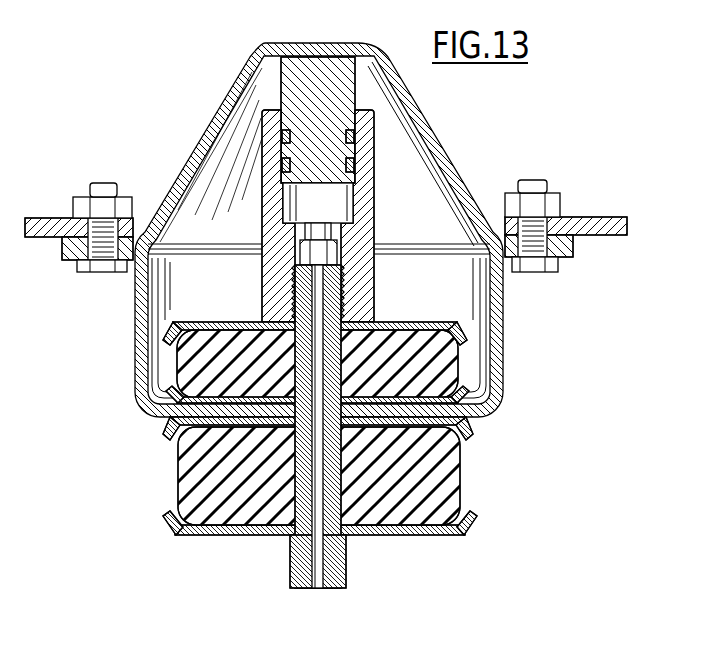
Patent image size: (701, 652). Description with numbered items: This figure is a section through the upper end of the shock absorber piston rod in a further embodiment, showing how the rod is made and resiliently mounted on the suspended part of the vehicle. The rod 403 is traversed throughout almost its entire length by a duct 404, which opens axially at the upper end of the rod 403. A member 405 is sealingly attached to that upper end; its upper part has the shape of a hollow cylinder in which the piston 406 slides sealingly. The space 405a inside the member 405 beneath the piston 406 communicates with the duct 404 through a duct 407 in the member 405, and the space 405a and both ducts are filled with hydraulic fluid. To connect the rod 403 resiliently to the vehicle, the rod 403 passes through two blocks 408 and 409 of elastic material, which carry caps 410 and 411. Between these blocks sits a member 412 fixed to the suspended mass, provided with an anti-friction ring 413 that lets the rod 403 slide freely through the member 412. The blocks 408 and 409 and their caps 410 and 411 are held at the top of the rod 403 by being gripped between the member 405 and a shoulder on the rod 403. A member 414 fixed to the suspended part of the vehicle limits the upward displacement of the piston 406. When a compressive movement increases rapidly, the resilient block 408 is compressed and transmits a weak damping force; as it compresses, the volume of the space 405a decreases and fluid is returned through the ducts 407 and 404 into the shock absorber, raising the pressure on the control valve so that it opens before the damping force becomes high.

The rod 403 is at (346, 578).
The duct 404 is at (310, 574).
The member 405 is at (270, 266).
The space 405a is at (352, 205).
The piston 406 is at (305, 58).
The duct 407 is at (318, 203).
The block of elastic material 408 is at (440, 466).
The block of elastic material 409 is at (231, 327).
The cap 410 is at (463, 422).
The cap 411 is at (423, 327).
The member 412 is at (503, 320).
The anti-friction ring 413 is at (317, 364).
The member 414 is at (432, 125).